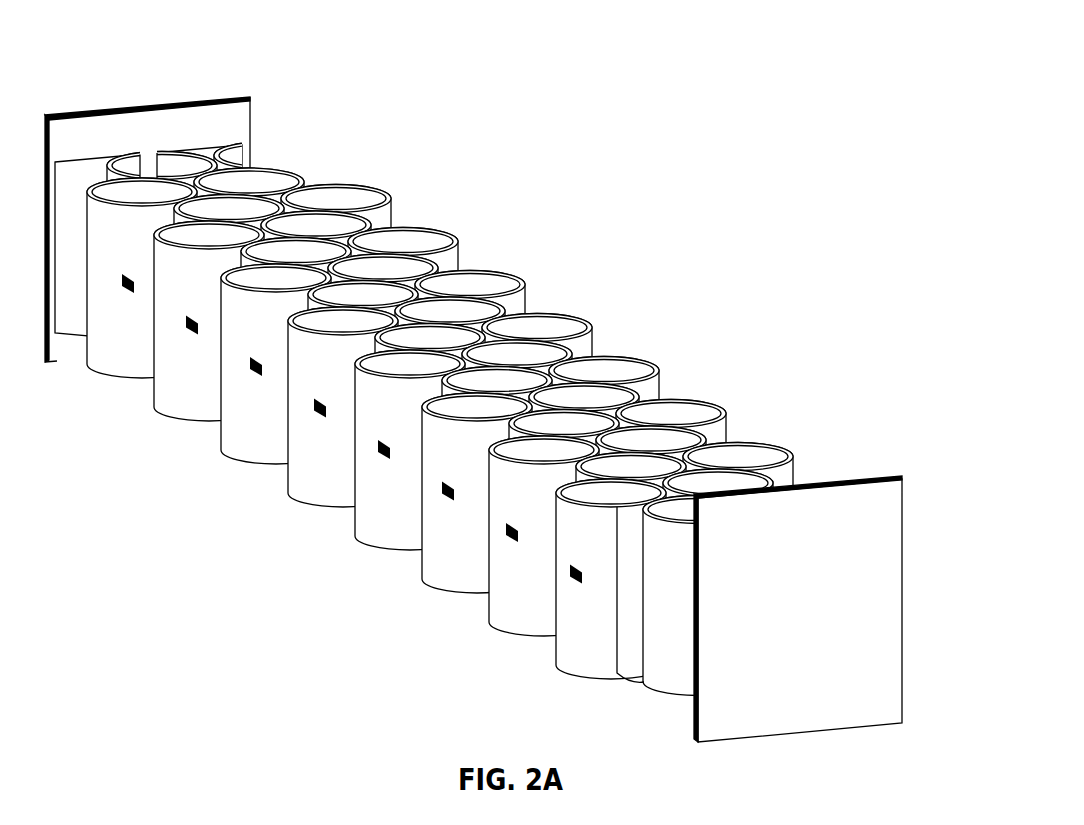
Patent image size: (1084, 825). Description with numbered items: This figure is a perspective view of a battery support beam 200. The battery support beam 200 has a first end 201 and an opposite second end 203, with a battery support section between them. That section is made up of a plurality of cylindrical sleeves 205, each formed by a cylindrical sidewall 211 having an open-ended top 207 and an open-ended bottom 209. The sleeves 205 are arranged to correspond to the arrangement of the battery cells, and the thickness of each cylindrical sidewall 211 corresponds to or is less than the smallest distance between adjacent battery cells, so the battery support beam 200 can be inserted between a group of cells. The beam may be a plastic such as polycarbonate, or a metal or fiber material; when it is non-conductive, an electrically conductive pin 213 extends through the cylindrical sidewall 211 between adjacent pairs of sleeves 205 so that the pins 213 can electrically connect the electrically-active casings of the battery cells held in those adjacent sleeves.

The battery support beam 200 is at (767, 49).
The first end 201 is at (214, 100).
The second end 203 is at (855, 506).
The cylindrical sleeves 205 is at (437, 514).
The open-ended top 207 is at (288, 320).
The open-ended bottom 209 is at (221, 447).
The cylindrical sidewall 211 is at (651, 368).
The electrically conductive pin 213 is at (573, 582).